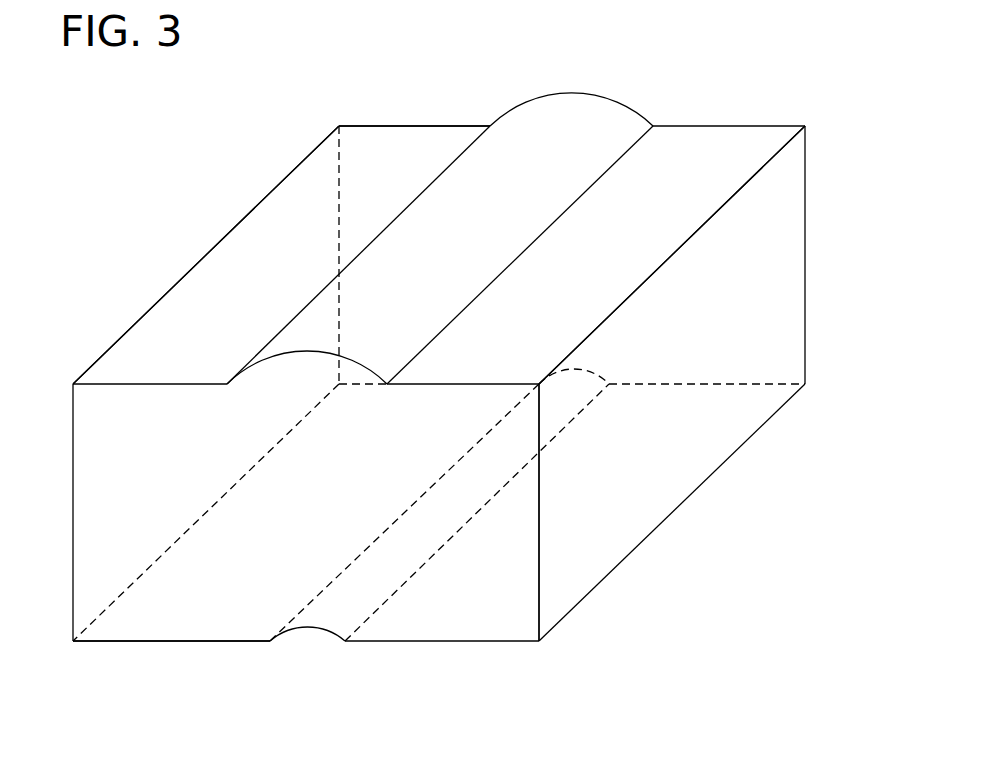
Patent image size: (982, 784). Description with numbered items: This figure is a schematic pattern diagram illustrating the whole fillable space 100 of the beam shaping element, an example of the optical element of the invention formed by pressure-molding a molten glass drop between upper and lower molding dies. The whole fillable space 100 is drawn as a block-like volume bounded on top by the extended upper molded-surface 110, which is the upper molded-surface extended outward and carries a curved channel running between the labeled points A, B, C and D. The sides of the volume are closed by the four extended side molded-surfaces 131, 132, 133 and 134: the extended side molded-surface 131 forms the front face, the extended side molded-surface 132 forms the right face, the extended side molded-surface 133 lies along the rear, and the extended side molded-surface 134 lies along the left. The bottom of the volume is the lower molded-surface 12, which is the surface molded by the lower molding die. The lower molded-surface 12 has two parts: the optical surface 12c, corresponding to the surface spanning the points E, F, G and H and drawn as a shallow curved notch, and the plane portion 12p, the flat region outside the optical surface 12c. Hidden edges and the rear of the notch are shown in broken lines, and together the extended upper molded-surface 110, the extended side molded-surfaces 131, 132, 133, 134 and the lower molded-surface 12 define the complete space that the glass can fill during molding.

The whole fillable space 100 is at (316, 96).
The extended upper molded-surface 110 is at (677, 172).
The extended side molded-surface 131 is at (105, 520).
The extended side molded-surface 132 is at (767, 277).
The extended side molded-surface 133 is at (435, 124).
The extended side molded-surface 134 is at (173, 285).
The lower molded-surface 12 is at (330, 710).
The plane portion 12p is at (173, 643).
The optical surface 12c is at (307, 630).